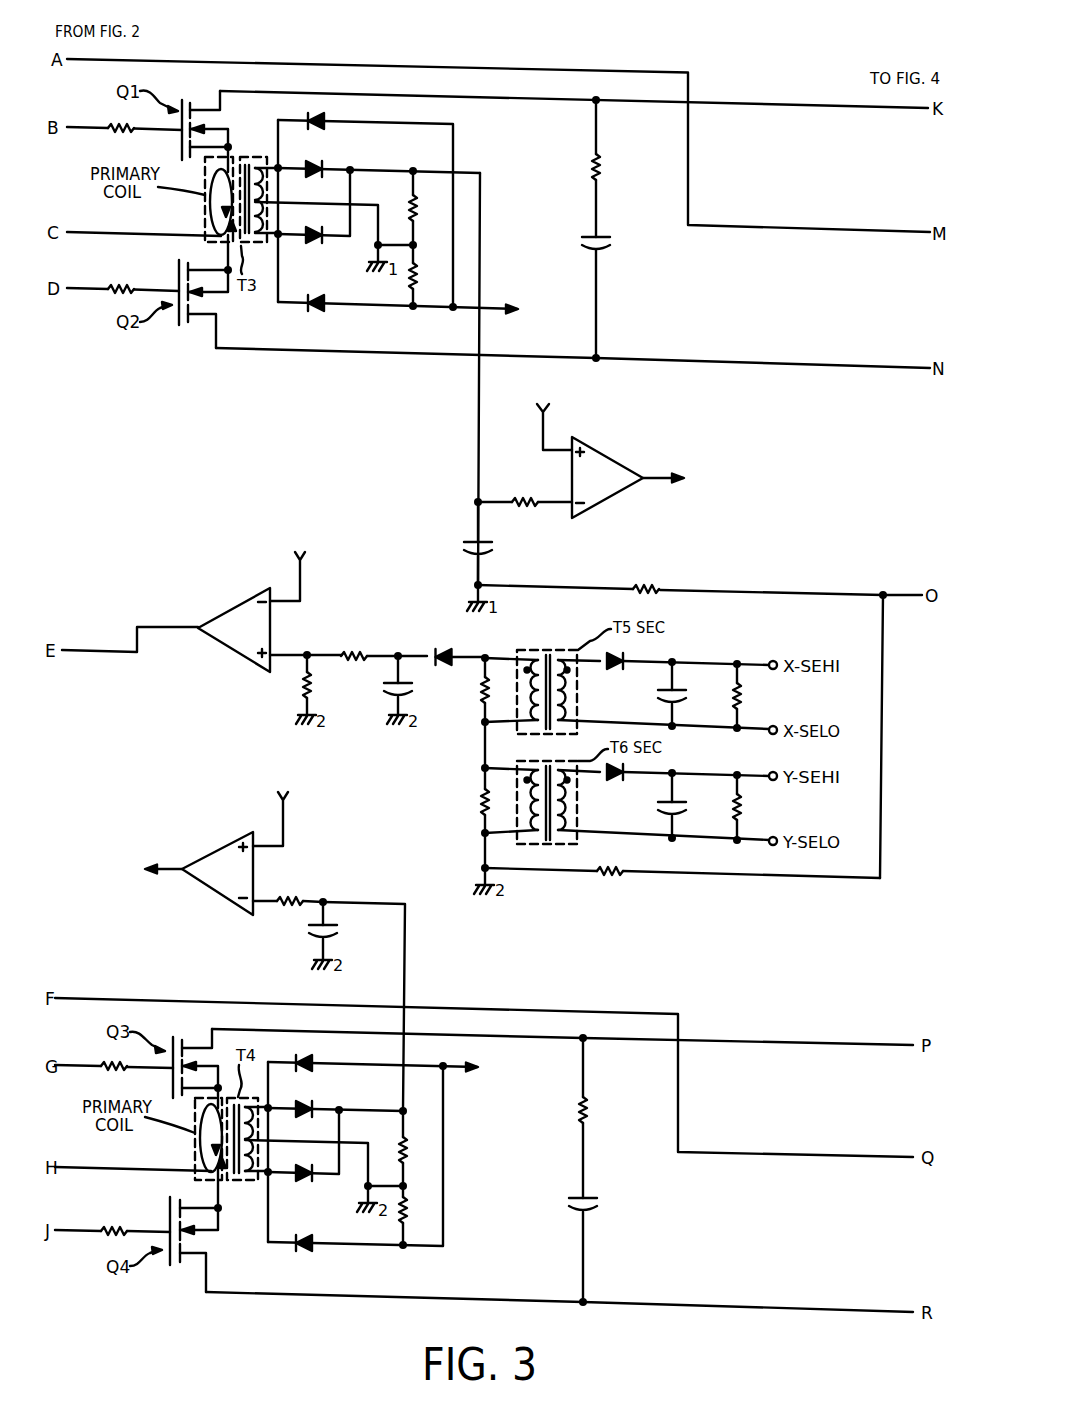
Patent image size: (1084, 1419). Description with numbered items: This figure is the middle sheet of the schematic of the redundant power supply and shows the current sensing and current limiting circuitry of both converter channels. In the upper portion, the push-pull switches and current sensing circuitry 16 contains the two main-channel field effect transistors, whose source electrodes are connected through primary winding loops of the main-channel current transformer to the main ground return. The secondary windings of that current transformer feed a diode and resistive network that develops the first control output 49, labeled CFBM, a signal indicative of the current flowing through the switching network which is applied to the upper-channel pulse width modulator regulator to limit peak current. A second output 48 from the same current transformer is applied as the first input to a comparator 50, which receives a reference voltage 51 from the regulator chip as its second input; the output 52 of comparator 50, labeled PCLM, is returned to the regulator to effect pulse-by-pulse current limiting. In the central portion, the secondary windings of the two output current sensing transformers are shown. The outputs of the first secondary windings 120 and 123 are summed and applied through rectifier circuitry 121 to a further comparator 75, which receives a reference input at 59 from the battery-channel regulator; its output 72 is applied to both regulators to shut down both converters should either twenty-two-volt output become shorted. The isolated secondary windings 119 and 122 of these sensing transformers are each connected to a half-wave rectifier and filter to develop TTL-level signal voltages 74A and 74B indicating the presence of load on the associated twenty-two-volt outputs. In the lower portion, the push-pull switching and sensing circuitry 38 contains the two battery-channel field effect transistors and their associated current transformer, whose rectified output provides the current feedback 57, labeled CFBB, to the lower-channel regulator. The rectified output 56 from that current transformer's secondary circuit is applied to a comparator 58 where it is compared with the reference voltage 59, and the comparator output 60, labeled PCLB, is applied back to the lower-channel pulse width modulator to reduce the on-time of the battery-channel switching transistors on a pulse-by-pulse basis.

The push-pull switches and current sensing circuitry 16 is at (383, 336).
The push-pull switching and sensing circuitry 38 is at (345, 1278).
The second output 48 is at (479, 445).
The first control output 49 is at (493, 305).
The comparator 50 is at (606, 452).
The reference voltage 51 is at (543, 436).
The output from comparator 52 is at (655, 477).
The rectified output 56 is at (405, 962).
The current feedback 57 is at (453, 1070).
The comparator 58 is at (215, 848).
The reference voltage 59 is at (300, 577).
The comparator output 60 is at (168, 873).
The output from comparator 72 is at (175, 626).
The comparator 75 is at (233, 606).
The signal voltage 74A is at (780, 707).
The signal voltage 74B is at (780, 818).
The isolated secondary winding 119 is at (568, 681).
The first secondary winding 120 is at (524, 702).
The rectifier circuitry 121 is at (425, 647).
The isolated secondary winding 122 is at (568, 794).
The first secondary winding 123 is at (524, 812).